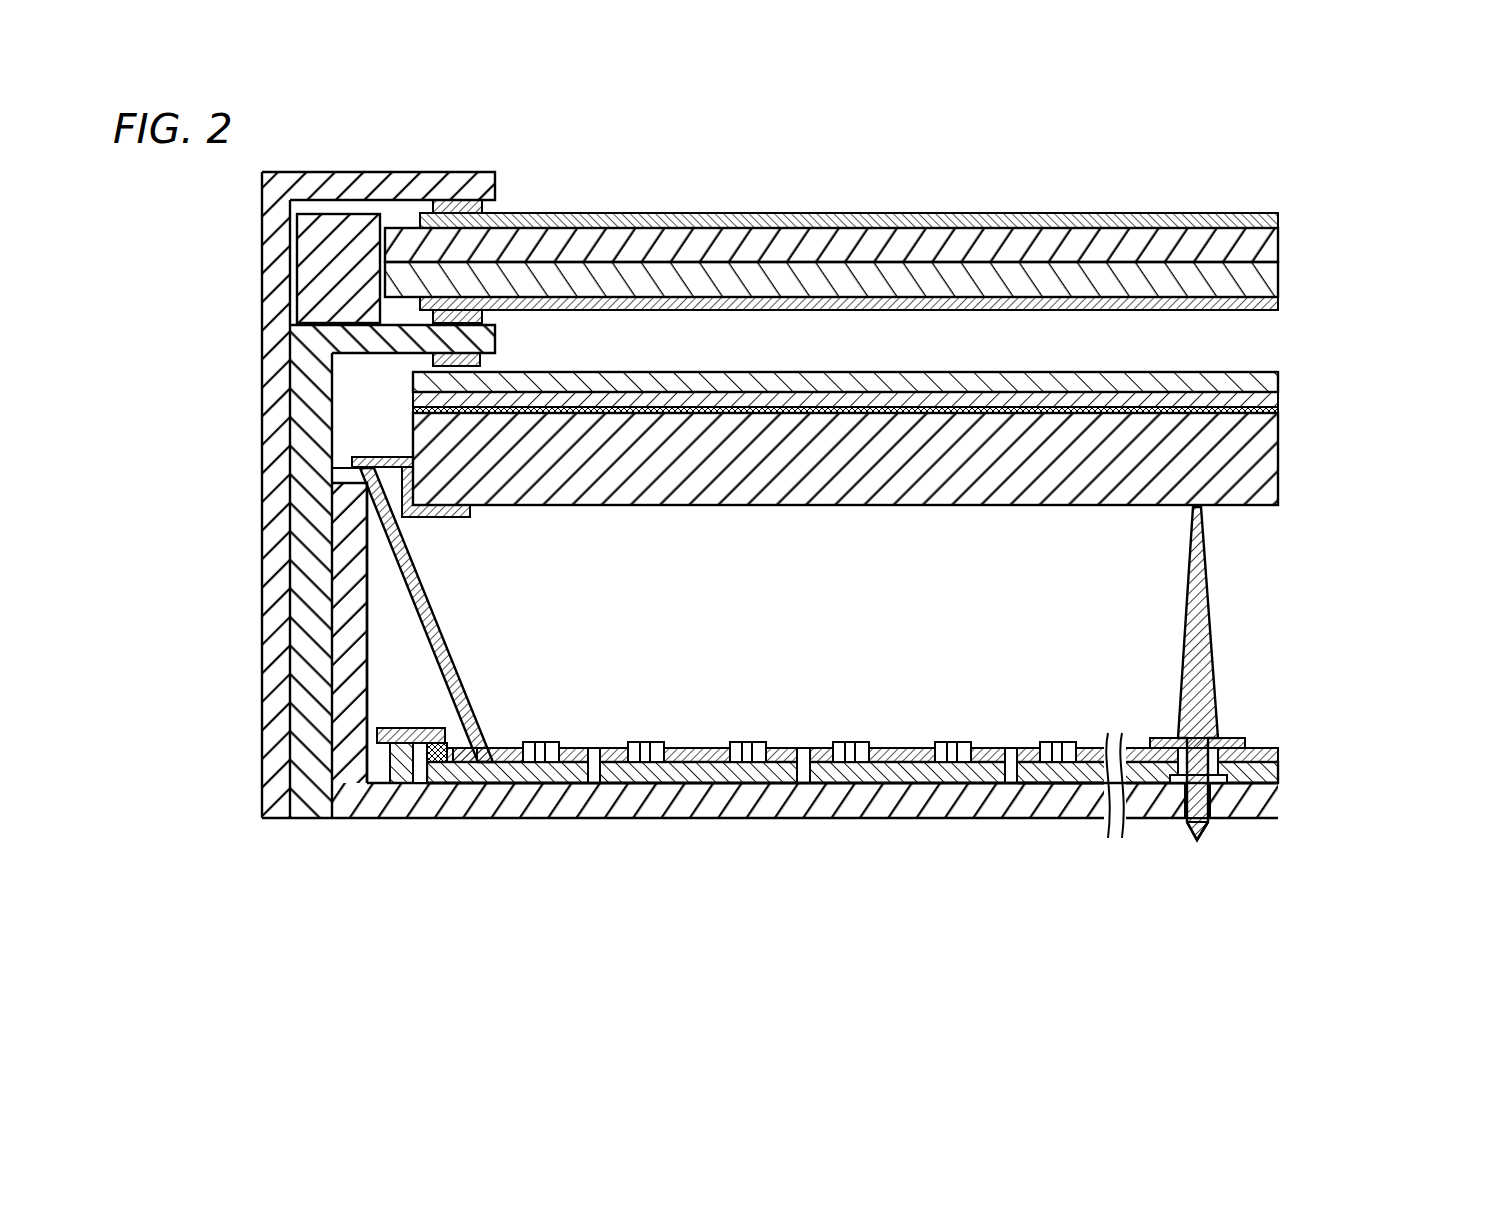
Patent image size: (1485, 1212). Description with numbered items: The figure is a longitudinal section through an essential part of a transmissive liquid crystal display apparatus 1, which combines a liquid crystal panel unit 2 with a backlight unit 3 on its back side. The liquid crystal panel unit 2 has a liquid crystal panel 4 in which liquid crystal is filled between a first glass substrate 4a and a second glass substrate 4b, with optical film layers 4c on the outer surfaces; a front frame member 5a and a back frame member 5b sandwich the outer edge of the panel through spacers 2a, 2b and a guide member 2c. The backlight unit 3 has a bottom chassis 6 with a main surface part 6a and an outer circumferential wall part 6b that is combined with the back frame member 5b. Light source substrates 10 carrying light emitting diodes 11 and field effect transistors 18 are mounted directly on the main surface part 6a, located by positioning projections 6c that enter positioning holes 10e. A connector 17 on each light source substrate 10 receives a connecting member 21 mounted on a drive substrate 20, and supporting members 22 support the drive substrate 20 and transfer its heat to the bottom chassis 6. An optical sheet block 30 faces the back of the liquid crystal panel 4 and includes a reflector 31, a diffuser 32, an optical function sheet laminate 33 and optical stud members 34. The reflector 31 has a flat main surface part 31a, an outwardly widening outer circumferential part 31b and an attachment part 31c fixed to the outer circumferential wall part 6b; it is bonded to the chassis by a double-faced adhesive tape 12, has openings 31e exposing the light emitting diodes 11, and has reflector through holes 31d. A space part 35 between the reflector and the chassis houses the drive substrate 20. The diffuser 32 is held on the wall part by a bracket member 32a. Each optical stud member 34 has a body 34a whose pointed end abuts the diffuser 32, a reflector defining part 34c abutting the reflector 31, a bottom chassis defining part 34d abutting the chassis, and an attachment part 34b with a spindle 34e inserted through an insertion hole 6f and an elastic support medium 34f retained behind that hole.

The liquid crystal display apparatus 1 is at (828, 133).
The liquid crystal panel unit 2 is at (163, 232).
The spacer 2a is at (455, 198).
The spacer 2b is at (483, 318).
The guide member 2c is at (330, 228).
The backlight unit 3 is at (853, 858).
The liquid crystal panel 4 is at (385, 262).
The first glass substrate 4a is at (1278, 280).
The second glass substrate 4b is at (1278, 243).
The optical film layer 4c is at (1190, 213).
The front frame member 5a is at (275, 318).
The back frame member 5b is at (305, 418).
The bottom chassis 6 is at (535, 922).
The main surface part 6a is at (516, 812).
The outer circumferential wall part 6b is at (377, 790).
The positioning projection 6c is at (594, 748).
The insertion hole 6f is at (1192, 832).
The light source substrate 10 is at (905, 785).
The positioning hole 10e is at (594, 785).
The light emitting diode 11 is at (531, 742).
The double-faced adhesive tape 12 is at (1093, 785).
The connector 17 is at (479, 688).
The connecting member 21 is at (444, 728).
The field effect transistor 18 is at (465, 766).
The drive substrate 20 is at (410, 728).
The supporting member 22 is at (401, 785).
The optical sheet block 30 is at (1423, 360).
The reflector 31 is at (1278, 752).
The main surface part 31a is at (648, 746).
The outer circumferential part 31b is at (428, 586).
The attachment part 31c is at (360, 457).
The reflector through hole 31d is at (1180, 735).
The opening 31e is at (554, 742).
The diffuser 32 is at (1262, 468).
The bracket member 32a is at (452, 518).
The optical function sheet laminate 33 is at (1285, 370).
The optical stud member 34 is at (1222, 610).
The body 34a is at (1361, 508).
The attachment part 34b is at (1361, 815).
The reflector defining part 34c is at (1246, 742).
The bottom chassis defining part 34d is at (1228, 778).
The spindle 34e is at (1205, 840).
The support medium 34f is at (1212, 826).
The space part 35 is at (395, 633).